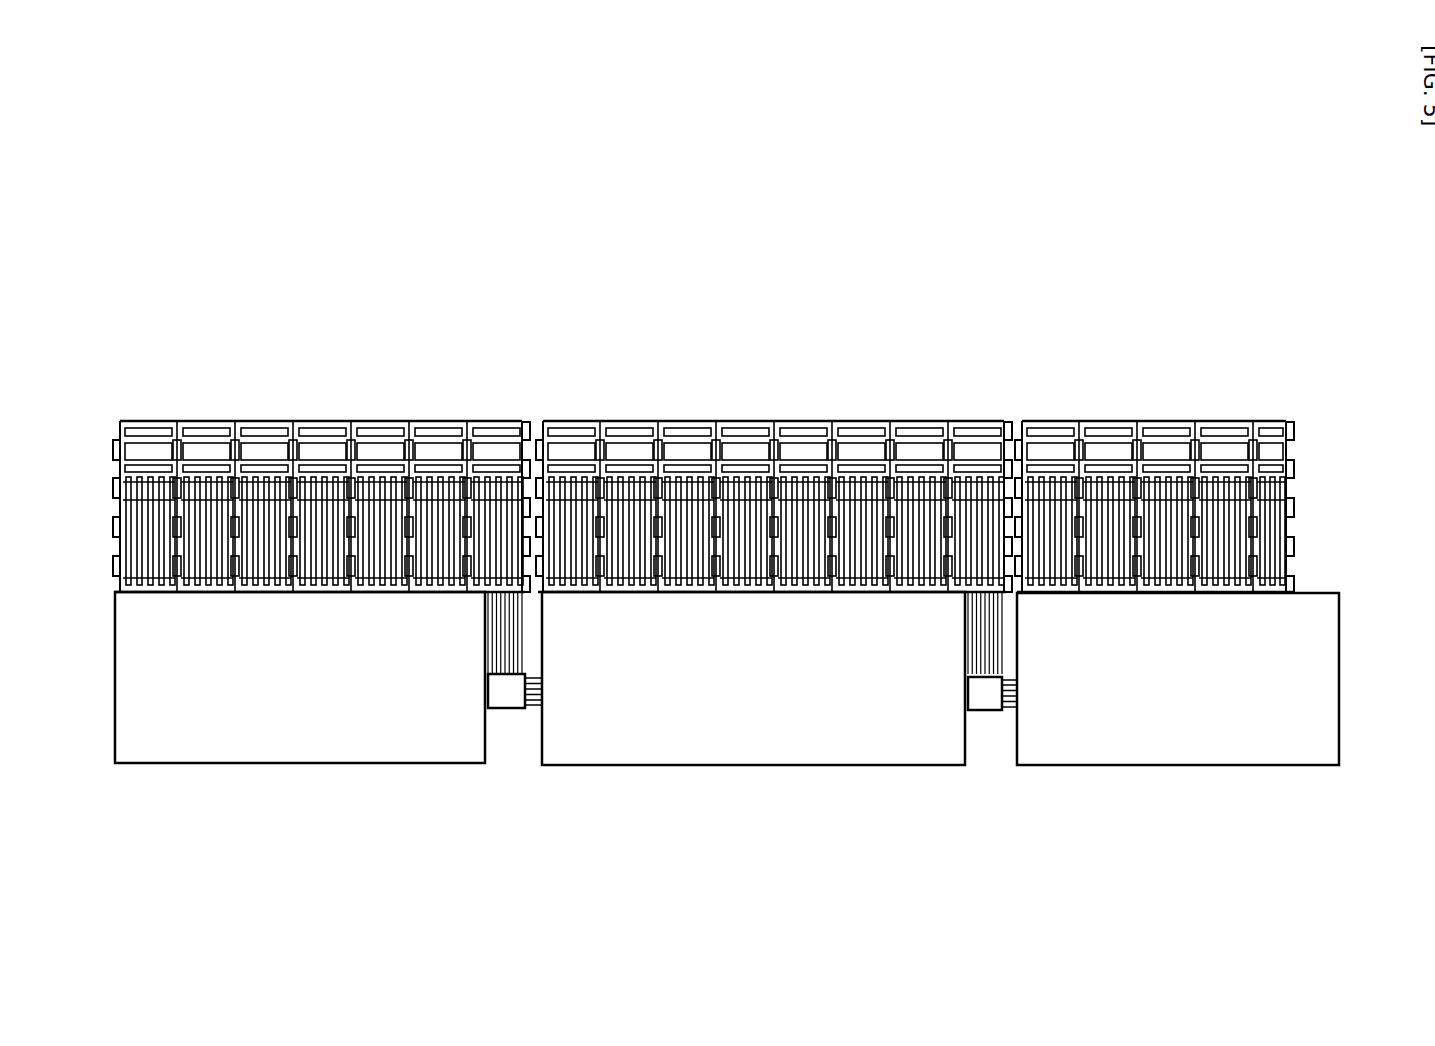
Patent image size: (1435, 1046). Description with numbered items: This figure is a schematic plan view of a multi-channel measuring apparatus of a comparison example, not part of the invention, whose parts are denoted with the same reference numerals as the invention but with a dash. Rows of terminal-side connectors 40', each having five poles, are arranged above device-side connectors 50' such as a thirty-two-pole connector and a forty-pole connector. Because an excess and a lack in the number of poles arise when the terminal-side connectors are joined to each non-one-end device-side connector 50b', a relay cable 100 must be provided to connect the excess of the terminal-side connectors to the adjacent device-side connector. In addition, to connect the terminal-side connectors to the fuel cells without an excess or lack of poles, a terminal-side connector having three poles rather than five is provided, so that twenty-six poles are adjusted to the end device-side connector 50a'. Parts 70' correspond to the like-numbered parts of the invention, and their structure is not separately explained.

The terminal-side connector 40' is at (740, 421).
The comparison-example part corresponding to element seventy 70' is at (1312, 506).
The device-side connector 50' is at (727, 737).
The end device-side connector 50a' is at (1178, 737).
The non-one-end device-side connector 50b' is at (540, 729).
The relay cable 100 is at (509, 709).